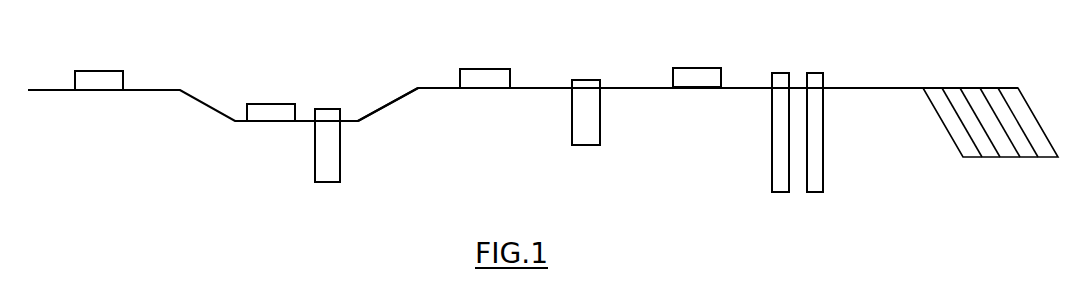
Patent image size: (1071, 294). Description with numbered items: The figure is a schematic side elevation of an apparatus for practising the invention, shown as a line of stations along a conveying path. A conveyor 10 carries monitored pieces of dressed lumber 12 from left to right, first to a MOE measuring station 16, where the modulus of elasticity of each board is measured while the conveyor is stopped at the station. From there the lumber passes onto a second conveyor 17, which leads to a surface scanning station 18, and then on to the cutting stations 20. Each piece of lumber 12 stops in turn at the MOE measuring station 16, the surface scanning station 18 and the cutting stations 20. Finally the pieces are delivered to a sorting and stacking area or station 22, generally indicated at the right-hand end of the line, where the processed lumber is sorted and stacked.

The conveyor 10 is at (60, 89).
The piece of dressed lumber 12 is at (115, 71).
The MOE measuring station 16 is at (329, 109).
The second conveyor 17 is at (434, 86).
The surface scanning station 18 is at (591, 80).
The cutting stations 20 is at (810, 73).
The sorting and stacking area 22 is at (935, 88).